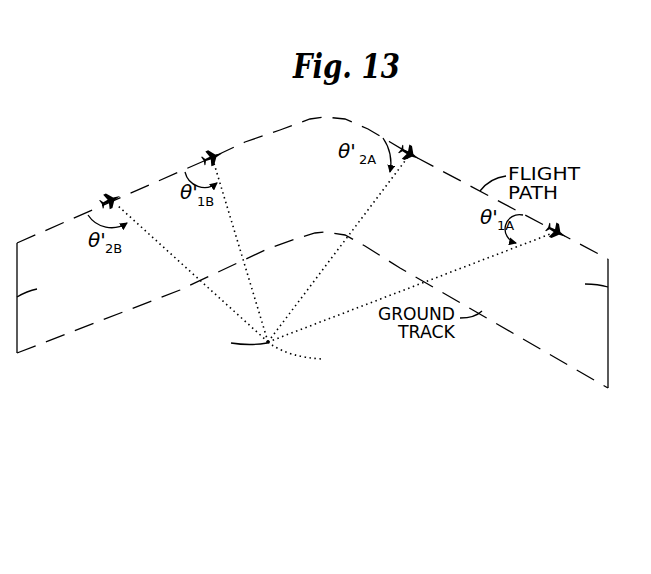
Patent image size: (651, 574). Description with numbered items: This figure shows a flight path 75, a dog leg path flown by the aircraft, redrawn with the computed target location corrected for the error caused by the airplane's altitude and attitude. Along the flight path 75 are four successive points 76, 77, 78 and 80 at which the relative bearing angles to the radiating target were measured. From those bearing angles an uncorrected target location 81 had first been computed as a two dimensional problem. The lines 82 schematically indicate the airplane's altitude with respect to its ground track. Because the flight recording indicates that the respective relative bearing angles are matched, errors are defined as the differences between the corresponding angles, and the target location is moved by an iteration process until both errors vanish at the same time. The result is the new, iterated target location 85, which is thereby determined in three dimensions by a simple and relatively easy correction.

The flight path 75 is at (347, 121).
The measurement point 76 is at (572, 234).
The measurement point 77 is at (420, 151).
The measurement point 78 is at (209, 152).
The measurement point 80 is at (114, 197).
The target location 81 is at (322, 362).
The altitude lines 82 is at (17, 270).
The new target location 85 is at (269, 338).